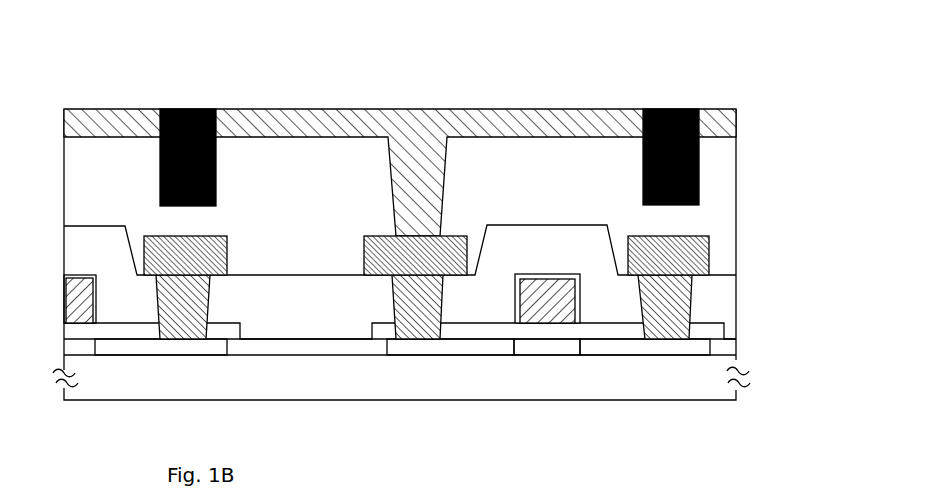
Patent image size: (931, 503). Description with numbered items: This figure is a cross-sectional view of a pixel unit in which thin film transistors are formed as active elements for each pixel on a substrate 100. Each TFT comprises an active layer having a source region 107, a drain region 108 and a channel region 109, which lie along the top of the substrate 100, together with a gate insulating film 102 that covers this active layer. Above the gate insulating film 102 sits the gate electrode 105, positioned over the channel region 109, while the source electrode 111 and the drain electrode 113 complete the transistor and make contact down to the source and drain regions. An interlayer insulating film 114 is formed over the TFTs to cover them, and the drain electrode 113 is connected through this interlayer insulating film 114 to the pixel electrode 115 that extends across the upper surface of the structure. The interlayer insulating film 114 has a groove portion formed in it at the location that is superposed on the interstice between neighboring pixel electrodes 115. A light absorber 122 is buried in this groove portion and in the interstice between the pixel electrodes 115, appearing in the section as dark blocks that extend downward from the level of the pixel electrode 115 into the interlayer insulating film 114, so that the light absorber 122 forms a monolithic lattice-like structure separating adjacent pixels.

The substrate 100 is at (737, 398).
The gate insulating film 102 is at (738, 345).
The gate electrode 105 is at (540, 274).
The source region 107 is at (151, 356).
The drain region 108 is at (482, 347).
The channel region 109 is at (546, 347).
The source electrode 111 is at (708, 253).
The drain electrode 113 is at (375, 235).
The interlayer insulating film 114 is at (736, 175).
The pixel electrode 115 is at (295, 109).
The light absorber 122 is at (192, 109).